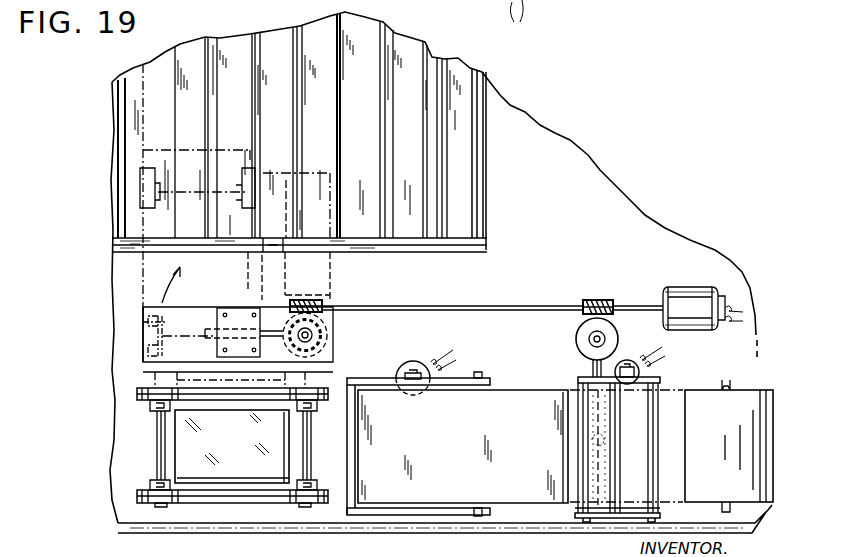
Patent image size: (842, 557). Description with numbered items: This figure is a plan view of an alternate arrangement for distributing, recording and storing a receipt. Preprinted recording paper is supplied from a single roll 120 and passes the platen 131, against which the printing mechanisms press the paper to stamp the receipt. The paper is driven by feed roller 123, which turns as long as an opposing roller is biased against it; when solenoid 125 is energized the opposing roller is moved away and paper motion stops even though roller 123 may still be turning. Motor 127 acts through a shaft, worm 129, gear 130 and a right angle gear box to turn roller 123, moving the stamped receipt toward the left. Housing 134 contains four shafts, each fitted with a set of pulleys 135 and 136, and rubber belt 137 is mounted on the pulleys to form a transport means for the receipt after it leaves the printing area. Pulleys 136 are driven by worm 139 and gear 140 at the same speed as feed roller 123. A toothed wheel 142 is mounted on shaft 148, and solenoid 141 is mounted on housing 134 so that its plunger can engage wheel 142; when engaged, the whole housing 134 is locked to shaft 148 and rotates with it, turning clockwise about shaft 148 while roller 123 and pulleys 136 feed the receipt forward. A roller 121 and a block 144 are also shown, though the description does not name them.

The roll 120 is at (729, 446).
The roller 121 is at (415, 362).
The roller 123 is at (580, 512).
The solenoid 125 is at (645, 374).
The motor 127 is at (691, 298).
The worm 129 is at (604, 300).
The gear 130 is at (575, 339).
The platen 131 is at (457, 444).
The housing 134 is at (145, 308).
The pulleys 135 is at (150, 404).
The pulleys 136 is at (314, 404).
The rubber belt 137 is at (207, 497).
The worm 139 is at (314, 301).
The gear 140 is at (330, 331).
The solenoid 141 is at (217, 326).
The toothed wheel 142 is at (332, 346).
The block 144 is at (232, 446).
The shaft 148 is at (318, 323).